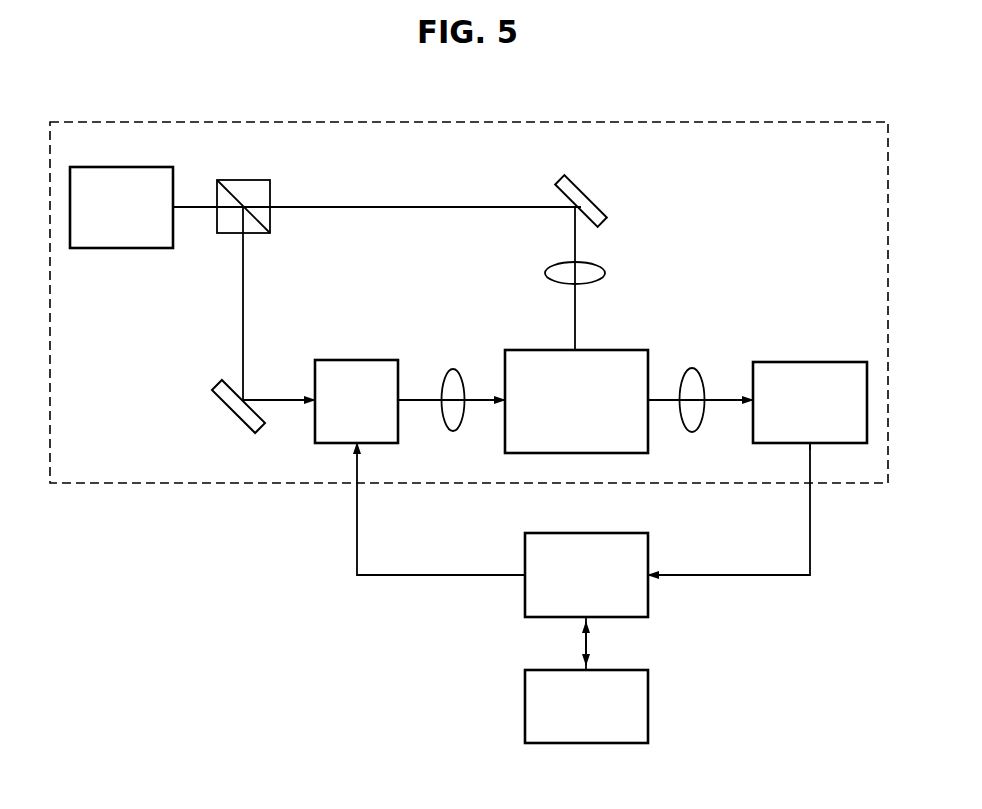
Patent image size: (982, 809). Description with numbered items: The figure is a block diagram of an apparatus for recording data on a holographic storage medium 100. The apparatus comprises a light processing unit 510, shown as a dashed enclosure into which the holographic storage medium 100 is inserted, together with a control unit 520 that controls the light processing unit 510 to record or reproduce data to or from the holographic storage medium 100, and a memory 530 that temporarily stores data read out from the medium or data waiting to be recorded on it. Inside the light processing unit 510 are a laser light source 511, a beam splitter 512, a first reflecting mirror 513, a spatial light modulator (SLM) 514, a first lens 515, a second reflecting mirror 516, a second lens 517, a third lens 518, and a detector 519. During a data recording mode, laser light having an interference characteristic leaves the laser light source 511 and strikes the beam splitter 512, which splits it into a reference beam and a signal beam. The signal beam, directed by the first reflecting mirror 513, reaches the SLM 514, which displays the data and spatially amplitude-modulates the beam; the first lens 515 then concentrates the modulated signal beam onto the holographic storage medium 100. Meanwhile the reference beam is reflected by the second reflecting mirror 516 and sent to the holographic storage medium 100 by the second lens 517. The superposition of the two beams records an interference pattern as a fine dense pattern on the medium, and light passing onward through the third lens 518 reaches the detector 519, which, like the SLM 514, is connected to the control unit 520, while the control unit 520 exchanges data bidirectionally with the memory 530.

The holographic storage medium 100 is at (597, 350).
The light processing unit 510 is at (157, 483).
The laser light source 511 is at (123, 167).
The beam splitter 512 is at (245, 180).
The first reflecting mirror 513 is at (232, 415).
The spatial light modulator (SLM) 514 is at (357, 360).
The first lens 515 is at (453, 368).
The second reflecting mirror 516 is at (587, 195).
The second lens 517 is at (608, 275).
The third lens 518 is at (692, 368).
The detector 519 is at (810, 362).
The control unit 520 is at (603, 533).
The memory 530 is at (603, 670).